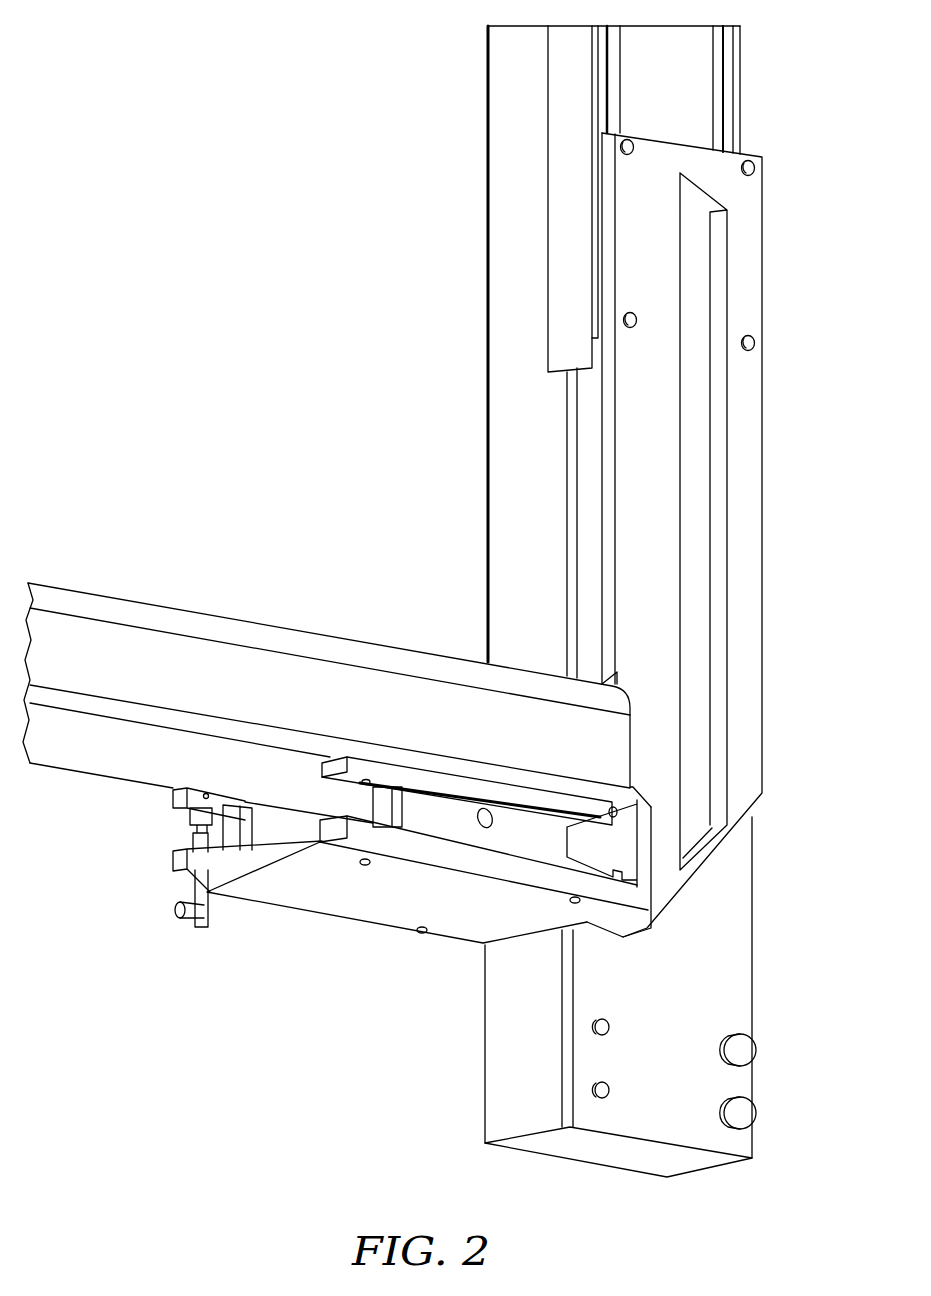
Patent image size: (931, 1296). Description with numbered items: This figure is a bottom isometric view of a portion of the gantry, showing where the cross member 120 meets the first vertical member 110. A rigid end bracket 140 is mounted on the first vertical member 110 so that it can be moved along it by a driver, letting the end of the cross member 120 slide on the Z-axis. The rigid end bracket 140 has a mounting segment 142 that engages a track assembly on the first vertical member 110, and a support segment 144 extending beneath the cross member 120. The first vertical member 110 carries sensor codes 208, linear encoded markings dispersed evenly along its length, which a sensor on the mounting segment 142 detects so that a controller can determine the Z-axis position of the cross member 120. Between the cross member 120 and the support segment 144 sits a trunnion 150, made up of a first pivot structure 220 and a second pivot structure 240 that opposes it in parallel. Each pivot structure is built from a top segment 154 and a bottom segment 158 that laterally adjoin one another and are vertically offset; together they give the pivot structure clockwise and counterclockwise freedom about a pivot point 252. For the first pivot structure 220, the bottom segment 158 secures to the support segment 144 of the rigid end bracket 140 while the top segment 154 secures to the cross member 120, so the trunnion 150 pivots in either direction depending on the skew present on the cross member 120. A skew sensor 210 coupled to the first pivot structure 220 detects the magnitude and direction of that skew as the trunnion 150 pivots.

The first vertical member 110 is at (510, 207).
The cross member 120 is at (315, 632).
The rigid end bracket 140 is at (793, 560).
The mounting segment 142 is at (752, 453).
The support segment 144 is at (473, 925).
The trunnion 150 is at (615, 847).
The top segment 154 is at (403, 775).
The bottom segment 158 is at (418, 837).
The sensor codes 208 is at (607, 50).
The skew sensor 210 is at (170, 917).
The first pivot structure 220 is at (173, 833).
The second pivot structure 240 is at (340, 858).
The pivot point 252 is at (477, 826).